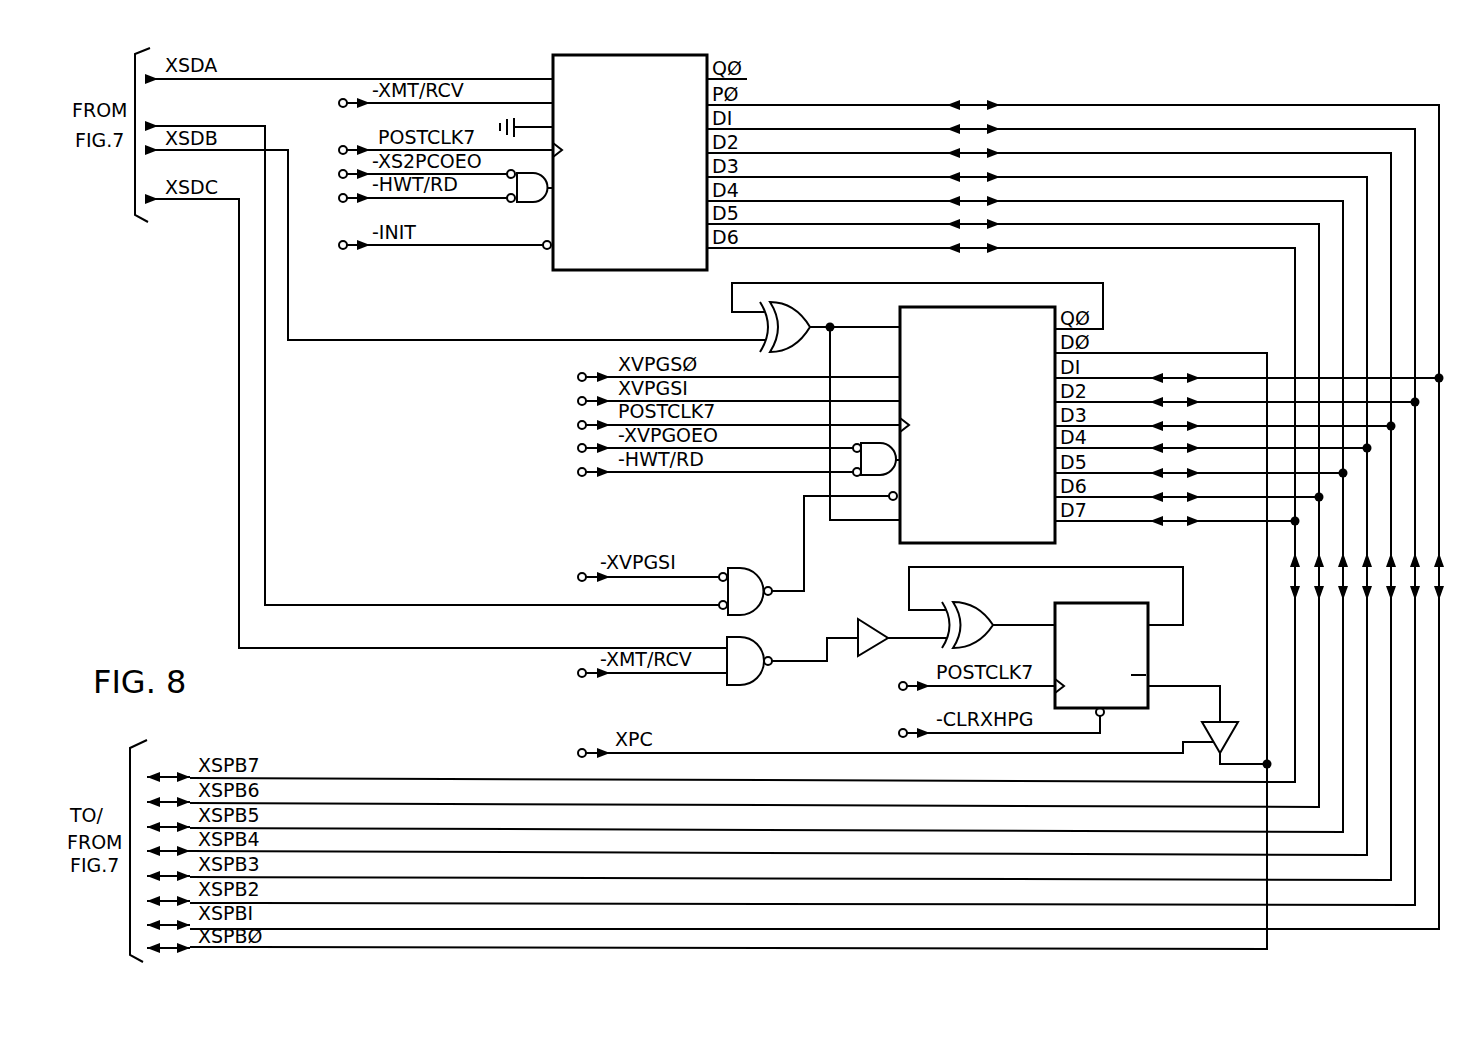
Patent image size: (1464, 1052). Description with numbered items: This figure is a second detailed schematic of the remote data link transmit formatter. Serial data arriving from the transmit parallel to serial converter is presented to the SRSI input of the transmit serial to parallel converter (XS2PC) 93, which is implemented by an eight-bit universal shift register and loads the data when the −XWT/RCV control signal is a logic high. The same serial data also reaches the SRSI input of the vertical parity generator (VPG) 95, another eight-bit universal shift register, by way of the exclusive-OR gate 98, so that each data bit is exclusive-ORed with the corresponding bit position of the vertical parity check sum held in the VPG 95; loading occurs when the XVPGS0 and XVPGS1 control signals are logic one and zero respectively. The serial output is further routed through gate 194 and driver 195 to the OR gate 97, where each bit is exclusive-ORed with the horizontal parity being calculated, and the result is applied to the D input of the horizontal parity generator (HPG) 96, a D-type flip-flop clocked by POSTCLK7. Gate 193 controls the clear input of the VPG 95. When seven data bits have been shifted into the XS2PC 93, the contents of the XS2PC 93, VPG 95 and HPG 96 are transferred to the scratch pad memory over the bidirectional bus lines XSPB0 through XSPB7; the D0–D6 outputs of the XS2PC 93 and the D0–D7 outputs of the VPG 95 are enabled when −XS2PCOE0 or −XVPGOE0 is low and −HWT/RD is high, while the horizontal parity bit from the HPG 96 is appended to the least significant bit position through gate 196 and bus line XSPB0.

The transmit serial to parallel converter (XS2PC) 93 is at (640, 275).
The vertical parity generator (VPG) 95 is at (1050, 545).
The horizontal parity generator (HPG) 96 is at (1152, 651).
The OR gate 97 is at (958, 602).
The exclusive-OR gate 98 is at (800, 308).
The NAND gate 193 is at (745, 573).
The gate 194 is at (746, 642).
The driver 195 is at (878, 616).
The gate 196 is at (1202, 729).